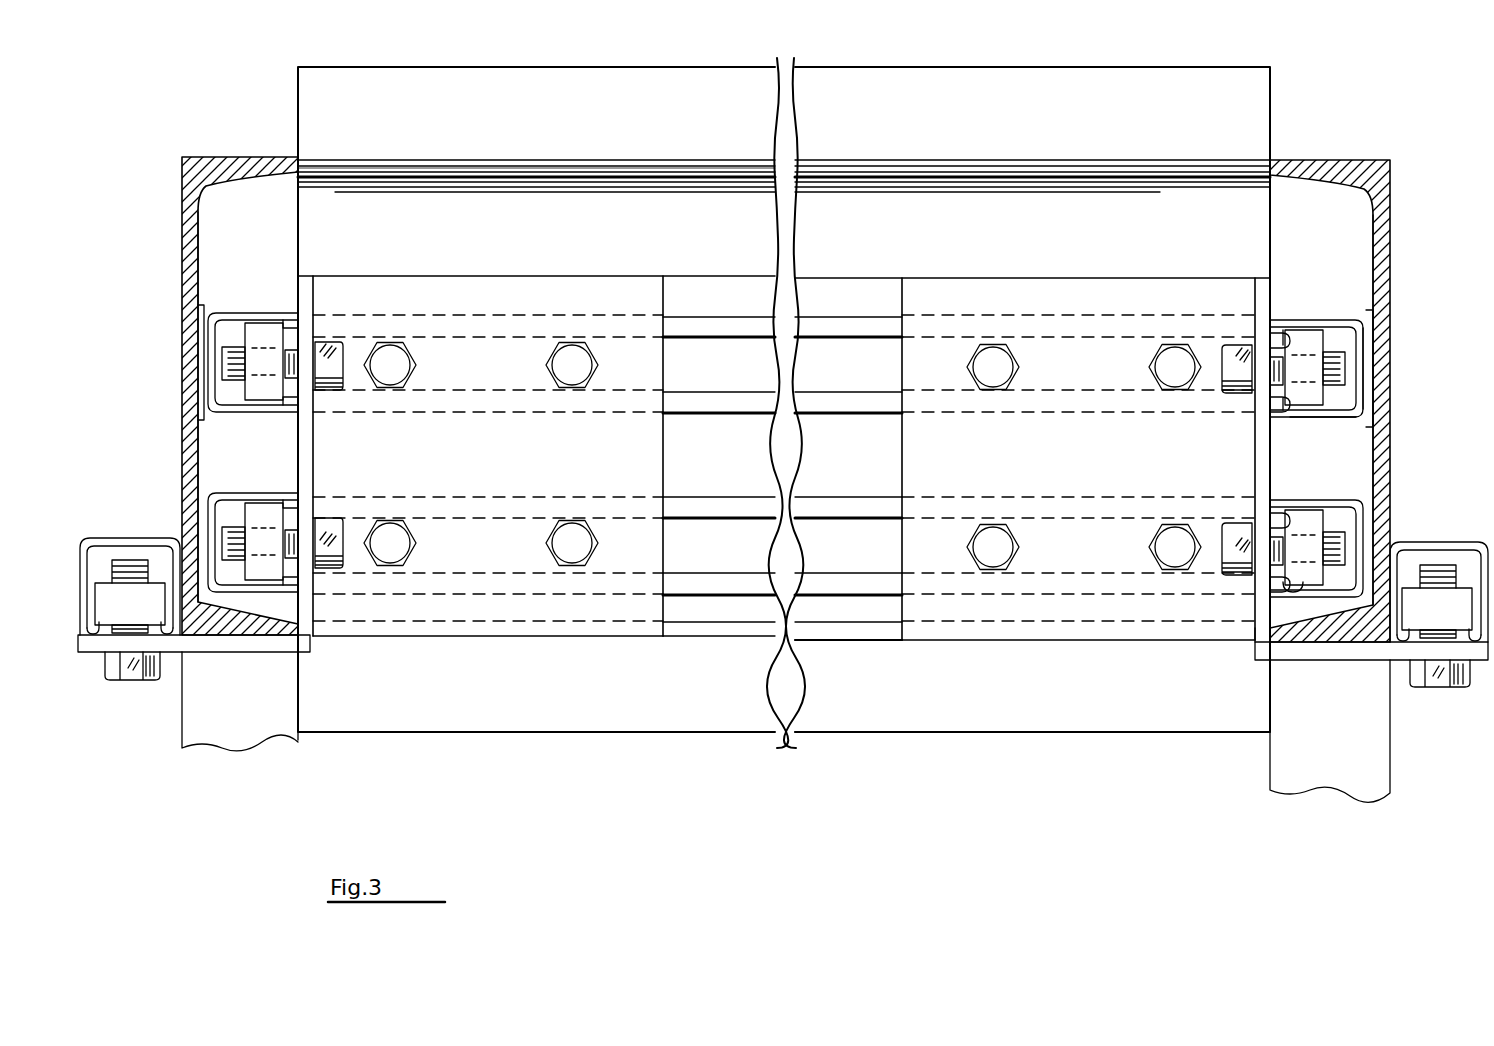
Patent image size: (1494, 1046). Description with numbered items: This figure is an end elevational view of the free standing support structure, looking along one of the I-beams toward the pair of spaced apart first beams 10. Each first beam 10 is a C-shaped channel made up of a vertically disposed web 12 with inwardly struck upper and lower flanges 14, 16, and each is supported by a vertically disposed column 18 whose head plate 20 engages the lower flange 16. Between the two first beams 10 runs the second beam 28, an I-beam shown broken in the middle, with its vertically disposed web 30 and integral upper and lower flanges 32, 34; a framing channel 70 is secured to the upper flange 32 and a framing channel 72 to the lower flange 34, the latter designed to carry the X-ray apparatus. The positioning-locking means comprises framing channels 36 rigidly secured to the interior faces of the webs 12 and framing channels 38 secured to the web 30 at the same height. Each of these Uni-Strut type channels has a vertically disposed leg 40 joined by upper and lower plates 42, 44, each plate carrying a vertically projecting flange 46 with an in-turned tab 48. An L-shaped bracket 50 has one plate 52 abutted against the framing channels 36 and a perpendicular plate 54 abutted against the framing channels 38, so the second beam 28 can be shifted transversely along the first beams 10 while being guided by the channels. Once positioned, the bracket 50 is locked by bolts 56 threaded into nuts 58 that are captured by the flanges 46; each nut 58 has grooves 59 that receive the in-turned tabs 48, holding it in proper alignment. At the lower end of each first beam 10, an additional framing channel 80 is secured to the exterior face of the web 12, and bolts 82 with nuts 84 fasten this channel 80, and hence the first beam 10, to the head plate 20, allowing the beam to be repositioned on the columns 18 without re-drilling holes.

The first beam 10 is at (230, 148).
The web 12 is at (182, 383).
The upper flange 14 is at (255, 175).
The lower flange 16 is at (240, 644).
The column 18 is at (290, 740).
The head plate 20 is at (300, 650).
The second beam 28 is at (368, 195).
The web 30 is at (862, 448).
The upper flange 32 is at (910, 158).
The lower flange 34 is at (830, 636).
The framing channel 36 is at (252, 493).
The framing channel 38 is at (700, 315).
The leg 40 is at (1365, 358).
The upper plate 42 is at (1328, 320).
The lower plate 44 is at (1320, 418).
The flange 46 is at (1275, 335).
The in-turned tab 48 is at (1280, 330).
The L-shaped bracket 50 is at (492, 270).
The plate 52 is at (314, 290).
The plate 54 is at (450, 636).
The bolt 56 is at (390, 350).
The nut 58 is at (262, 325).
The groove 59 is at (1300, 590).
The framing channel 70 is at (1115, 95).
The framing channel 72 is at (930, 733).
The framing channel 80 is at (130, 538).
The bolt 82 is at (140, 680).
The nut 84 is at (783, 599).